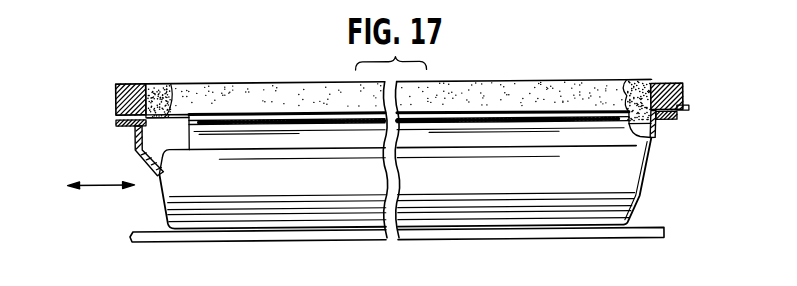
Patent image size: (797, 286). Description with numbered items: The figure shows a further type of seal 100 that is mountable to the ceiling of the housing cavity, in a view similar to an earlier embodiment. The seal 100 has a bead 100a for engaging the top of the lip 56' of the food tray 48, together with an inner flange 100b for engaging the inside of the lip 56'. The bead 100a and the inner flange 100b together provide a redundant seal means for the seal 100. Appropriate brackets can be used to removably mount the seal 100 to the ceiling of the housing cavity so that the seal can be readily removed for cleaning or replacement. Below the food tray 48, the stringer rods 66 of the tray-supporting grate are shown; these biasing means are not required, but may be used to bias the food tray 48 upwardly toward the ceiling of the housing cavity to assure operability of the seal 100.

The seal 100 is at (145, 55).
The bead 100a is at (124, 106).
The inner flange 100b is at (160, 114).
The lip 56' is at (410, 143).
The container tray 48 is at (637, 190).
The stringer rods 66 is at (487, 238).